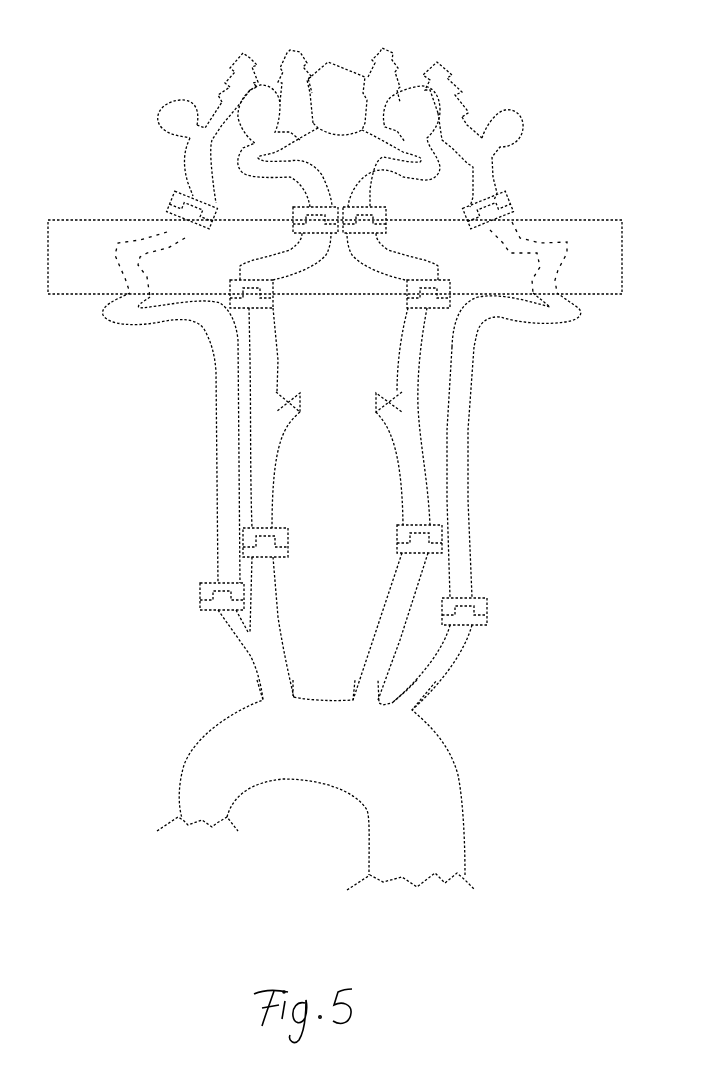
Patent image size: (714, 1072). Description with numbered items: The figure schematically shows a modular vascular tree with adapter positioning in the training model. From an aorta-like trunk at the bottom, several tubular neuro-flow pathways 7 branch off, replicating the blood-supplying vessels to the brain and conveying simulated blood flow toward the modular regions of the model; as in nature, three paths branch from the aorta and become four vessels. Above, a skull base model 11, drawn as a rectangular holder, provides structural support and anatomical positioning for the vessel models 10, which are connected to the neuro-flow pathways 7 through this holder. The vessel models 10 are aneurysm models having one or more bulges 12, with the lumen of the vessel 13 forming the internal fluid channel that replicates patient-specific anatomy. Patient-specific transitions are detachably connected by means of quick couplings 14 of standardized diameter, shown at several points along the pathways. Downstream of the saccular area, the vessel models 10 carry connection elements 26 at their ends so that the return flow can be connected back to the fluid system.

The neuro-flow pathway 7 is at (223, 343).
The vessel model 10 is at (527, 62).
The skull base model 11 is at (102, 285).
The bulge 12 is at (517, 113).
The lumen of the vessel 13 is at (498, 168).
The quick coupling 14 is at (172, 198).
The connection element 26 is at (368, 78).